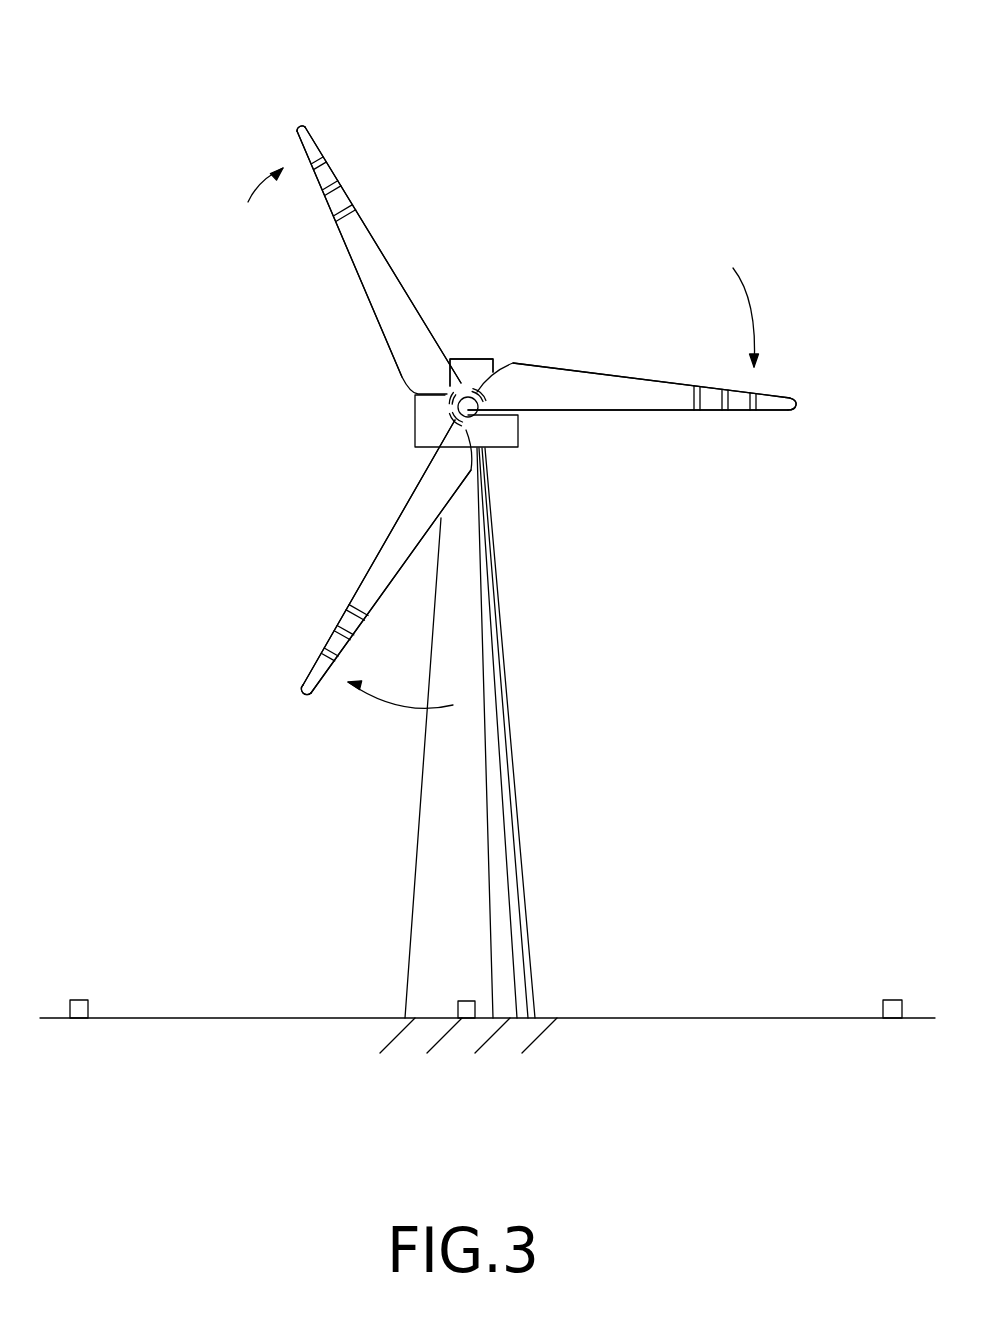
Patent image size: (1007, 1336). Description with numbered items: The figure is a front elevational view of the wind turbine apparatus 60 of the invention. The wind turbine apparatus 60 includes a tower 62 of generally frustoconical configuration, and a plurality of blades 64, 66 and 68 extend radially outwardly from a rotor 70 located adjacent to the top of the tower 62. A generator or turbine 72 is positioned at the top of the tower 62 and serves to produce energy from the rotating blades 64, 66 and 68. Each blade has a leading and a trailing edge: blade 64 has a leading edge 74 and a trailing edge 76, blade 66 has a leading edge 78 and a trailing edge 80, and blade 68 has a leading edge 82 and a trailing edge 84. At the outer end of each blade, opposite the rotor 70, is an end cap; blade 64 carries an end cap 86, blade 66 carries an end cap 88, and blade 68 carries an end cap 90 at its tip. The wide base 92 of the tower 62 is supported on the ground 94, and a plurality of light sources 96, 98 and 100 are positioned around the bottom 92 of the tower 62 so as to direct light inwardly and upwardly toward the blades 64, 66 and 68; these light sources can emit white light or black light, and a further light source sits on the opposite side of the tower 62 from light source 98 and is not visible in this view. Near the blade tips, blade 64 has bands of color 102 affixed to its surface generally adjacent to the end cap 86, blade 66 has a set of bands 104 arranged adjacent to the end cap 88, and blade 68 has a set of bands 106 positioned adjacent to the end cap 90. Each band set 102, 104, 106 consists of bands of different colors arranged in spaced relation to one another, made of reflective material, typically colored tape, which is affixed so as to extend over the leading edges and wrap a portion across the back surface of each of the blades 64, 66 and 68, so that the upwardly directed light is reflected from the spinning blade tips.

The wind turbine apparatus 60 is at (692, 225).
The tower 62 is at (497, 663).
The blade 64 is at (400, 302).
The blade 66 is at (612, 412).
The blade 68 is at (392, 570).
The rotor 70 is at (477, 382).
The generator or turbine 72 is at (517, 440).
The leading edge 74 is at (392, 262).
The trailing edge 76 is at (365, 292).
The leading edge 78 is at (672, 412).
The trailing edge 80 is at (646, 378).
The leading edge 82 is at (370, 627).
The trailing edge 84 is at (383, 535).
The end cap 86 is at (300, 121).
The end cap 88 is at (785, 392).
The end cap 90 is at (302, 695).
The wide base 92 is at (545, 1018).
The ground 94 is at (706, 1010).
The light source 96 is at (80, 1000).
The light source 98 is at (465, 1001).
The light source 100 is at (895, 1000).
The bands of color 102 is at (333, 148).
The set of bands 104 is at (763, 418).
The set of bands 106 is at (337, 607).